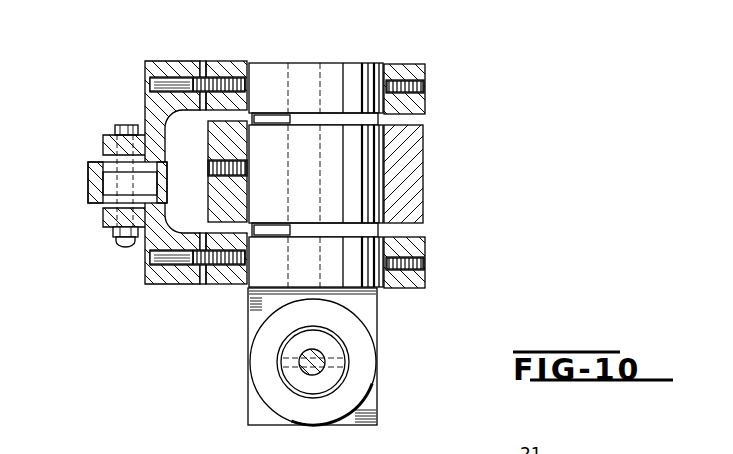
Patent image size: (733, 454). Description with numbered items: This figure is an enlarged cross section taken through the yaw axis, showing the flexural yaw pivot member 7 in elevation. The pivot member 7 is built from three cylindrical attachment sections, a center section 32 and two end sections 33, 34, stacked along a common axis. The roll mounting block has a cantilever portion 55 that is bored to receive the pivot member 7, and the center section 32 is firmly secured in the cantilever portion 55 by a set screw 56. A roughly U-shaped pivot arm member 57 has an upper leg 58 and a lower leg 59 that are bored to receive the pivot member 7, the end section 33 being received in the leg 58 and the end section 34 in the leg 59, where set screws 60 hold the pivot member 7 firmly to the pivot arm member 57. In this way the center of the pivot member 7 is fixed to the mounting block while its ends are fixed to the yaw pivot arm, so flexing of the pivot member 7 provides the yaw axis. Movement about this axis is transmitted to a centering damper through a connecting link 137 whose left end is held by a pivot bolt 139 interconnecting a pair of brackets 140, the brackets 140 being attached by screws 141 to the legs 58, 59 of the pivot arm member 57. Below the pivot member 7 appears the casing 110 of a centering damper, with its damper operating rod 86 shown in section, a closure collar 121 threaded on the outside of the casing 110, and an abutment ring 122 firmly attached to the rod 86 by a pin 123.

The yaw pivot member 7 is at (330, 154).
The center section 32 is at (280, 187).
The end section 33 is at (280, 92).
The end section 34 is at (280, 278).
The cantilever portion 55 is at (423, 163).
The set screw 56 is at (208, 172).
The pivot arm member 57 is at (212, 49).
The leg 58 is at (420, 63).
The leg 59 is at (413, 289).
The set screws 60 is at (426, 88).
The damper operating rod 86 is at (307, 373).
The casing 110 is at (246, 322).
The closure collar 121 is at (268, 350).
The abutment ring 122 is at (330, 380).
The pin 123 is at (333, 355).
The connecting link 137 is at (88, 181).
The pivot bolt 139 is at (115, 128).
The brackets 140 is at (158, 61).
The screws 141 is at (148, 84).